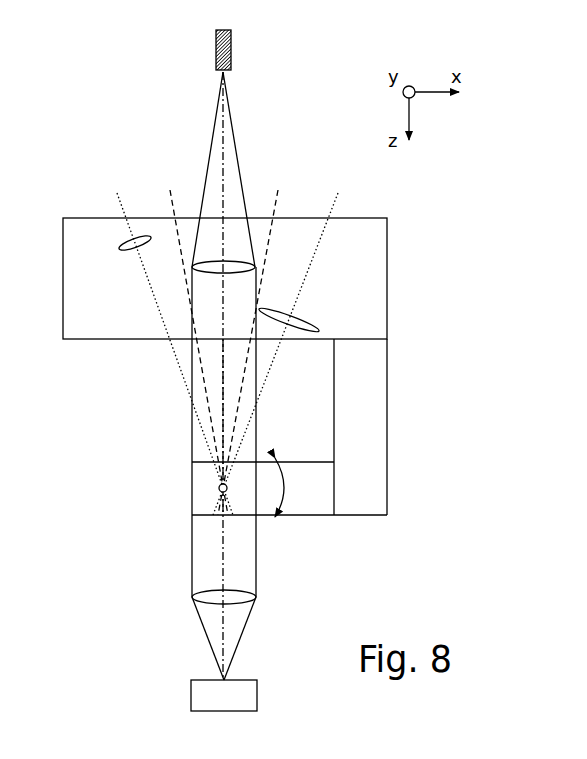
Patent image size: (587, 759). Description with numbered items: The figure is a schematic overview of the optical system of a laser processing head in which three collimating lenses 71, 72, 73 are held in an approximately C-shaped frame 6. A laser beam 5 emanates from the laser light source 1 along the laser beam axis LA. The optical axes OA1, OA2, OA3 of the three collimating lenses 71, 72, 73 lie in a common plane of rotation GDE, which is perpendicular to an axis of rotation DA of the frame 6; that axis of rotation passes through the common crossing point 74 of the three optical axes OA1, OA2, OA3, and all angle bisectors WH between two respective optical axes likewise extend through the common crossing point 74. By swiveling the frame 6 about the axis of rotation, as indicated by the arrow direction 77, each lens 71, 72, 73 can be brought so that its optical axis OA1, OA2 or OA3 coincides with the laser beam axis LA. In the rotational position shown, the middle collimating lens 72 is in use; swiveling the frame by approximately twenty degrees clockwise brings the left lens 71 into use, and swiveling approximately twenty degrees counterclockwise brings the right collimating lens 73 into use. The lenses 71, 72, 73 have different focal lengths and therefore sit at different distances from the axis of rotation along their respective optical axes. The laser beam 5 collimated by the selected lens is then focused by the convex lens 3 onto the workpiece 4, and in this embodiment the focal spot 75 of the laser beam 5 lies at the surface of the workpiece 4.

The laser light source 1 is at (207, 67).
The laser beam 5 is at (212, 134).
The laser beam axis LA is at (223, 147).
The angle bisectors WH is at (227, 339).
The left collimating lens 71 is at (118, 243).
The middle collimating lens 72 is at (235, 267).
The right collimating lens 73 is at (308, 322).
The frame 6 is at (363, 402).
The optical axis of the left collimating lens OA1 is at (175, 353).
The optical axis of the middle collimating lens OA2 is at (220, 387).
The optical axis of the right collimating lens OA3 is at (268, 380).
The common crossing point 74 is at (218, 486).
The common plane of rotation GDE is at (102, 545).
The arrow direction 77 is at (290, 505).
The convex lens 3 is at (238, 597).
The focal spot 75 is at (220, 680).
The workpiece 4 is at (247, 680).